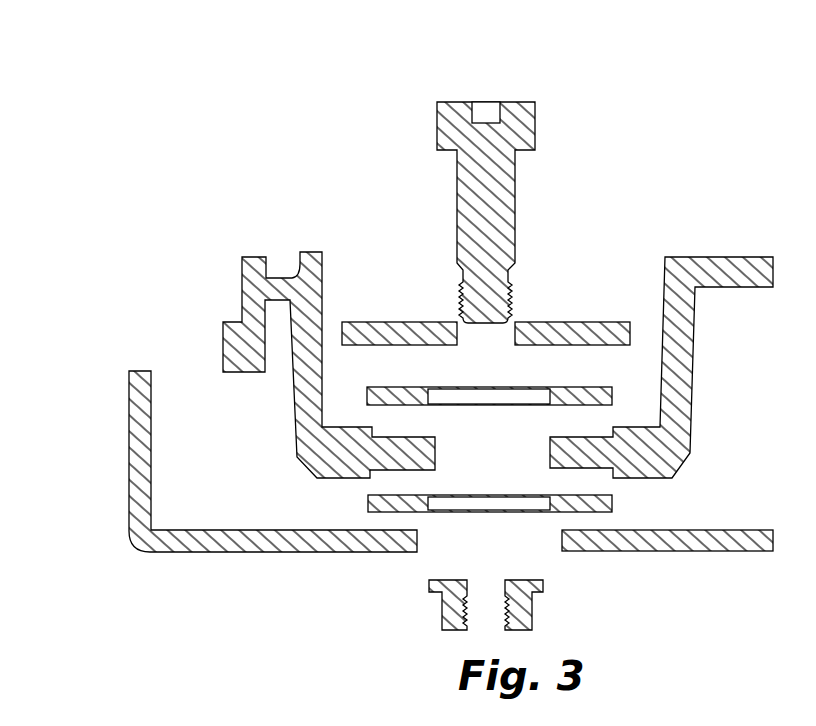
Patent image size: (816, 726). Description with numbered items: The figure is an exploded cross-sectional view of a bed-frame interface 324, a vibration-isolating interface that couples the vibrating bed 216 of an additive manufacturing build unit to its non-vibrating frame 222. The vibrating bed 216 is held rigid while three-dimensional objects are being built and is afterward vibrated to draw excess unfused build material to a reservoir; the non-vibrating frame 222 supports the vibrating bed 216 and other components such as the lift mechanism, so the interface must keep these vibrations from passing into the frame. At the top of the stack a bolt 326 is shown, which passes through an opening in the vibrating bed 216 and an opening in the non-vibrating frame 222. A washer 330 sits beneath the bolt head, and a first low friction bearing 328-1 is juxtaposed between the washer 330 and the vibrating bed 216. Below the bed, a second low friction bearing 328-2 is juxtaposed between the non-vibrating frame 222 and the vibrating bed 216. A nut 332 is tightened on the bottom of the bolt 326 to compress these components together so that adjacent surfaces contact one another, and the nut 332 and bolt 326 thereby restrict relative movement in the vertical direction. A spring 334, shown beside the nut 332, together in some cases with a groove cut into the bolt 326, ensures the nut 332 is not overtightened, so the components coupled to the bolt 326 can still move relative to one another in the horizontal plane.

The bed-frame interface 324 is at (155, 70).
The bolt 326 is at (506, 219).
The vibrating bed 216 is at (314, 254).
The washer 330 is at (606, 322).
The first low friction bearing 328-1 is at (567, 397).
The second low friction bearing 328-2 is at (611, 507).
The non-vibrating frame 222 is at (132, 535).
The nut 332 is at (507, 572).
The spring 334 is at (465, 573).